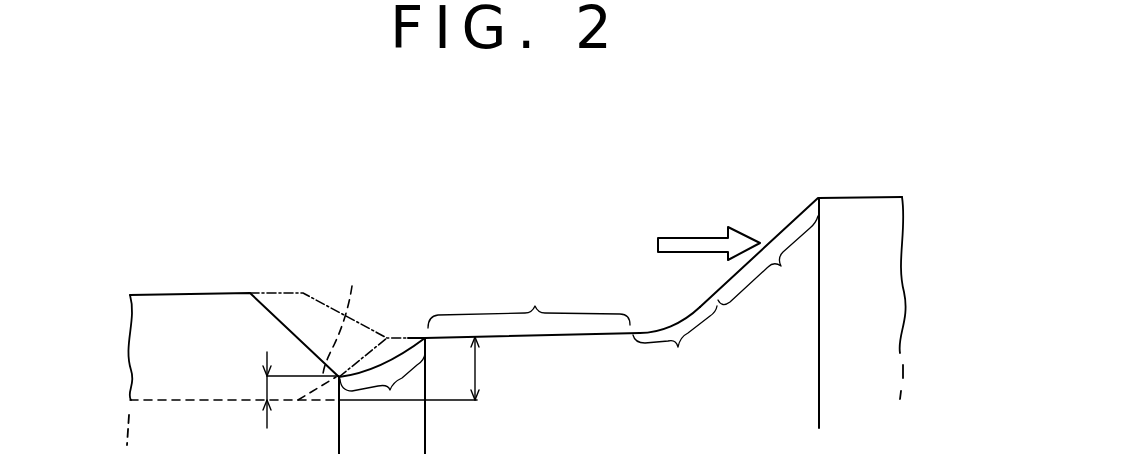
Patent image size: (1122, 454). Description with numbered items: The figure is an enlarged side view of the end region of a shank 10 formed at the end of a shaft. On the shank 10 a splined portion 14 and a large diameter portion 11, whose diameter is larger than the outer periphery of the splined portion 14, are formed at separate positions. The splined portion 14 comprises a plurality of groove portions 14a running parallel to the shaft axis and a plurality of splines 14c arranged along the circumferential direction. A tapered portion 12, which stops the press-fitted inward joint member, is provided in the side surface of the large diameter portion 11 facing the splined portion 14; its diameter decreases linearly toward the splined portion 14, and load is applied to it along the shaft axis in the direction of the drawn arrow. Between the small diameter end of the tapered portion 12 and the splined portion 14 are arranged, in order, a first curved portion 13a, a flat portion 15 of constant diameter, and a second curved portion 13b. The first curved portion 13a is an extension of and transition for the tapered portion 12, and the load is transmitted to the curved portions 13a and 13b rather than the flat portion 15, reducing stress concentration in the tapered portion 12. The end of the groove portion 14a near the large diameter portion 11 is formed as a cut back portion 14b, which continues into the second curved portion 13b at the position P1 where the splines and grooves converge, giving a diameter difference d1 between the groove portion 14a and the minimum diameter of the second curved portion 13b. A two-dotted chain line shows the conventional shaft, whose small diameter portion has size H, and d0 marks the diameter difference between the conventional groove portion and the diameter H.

The shank 10 is at (643, 189).
The large diameter portion 11 is at (858, 197).
The tapered portion 12 is at (759, 252).
The first curved portion 13a is at (675, 342).
The second curved portion 13b is at (390, 390).
The splined portion 14 is at (169, 293).
The groove portion 14a is at (165, 400).
The cut back portion 14b is at (346, 316).
The splines 14c is at (234, 293).
The flat portion 15 is at (524, 363).
The position P1 is at (339, 377).
The diameter of small diameter portion of conventional shaft H is at (411, 334).
The diameter difference d0 is at (426, 368).
The diameter difference d1 is at (286, 390).